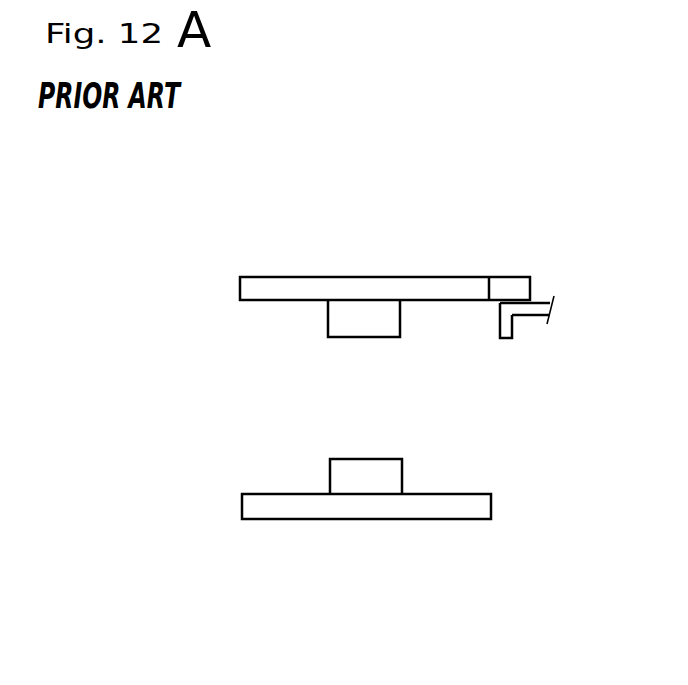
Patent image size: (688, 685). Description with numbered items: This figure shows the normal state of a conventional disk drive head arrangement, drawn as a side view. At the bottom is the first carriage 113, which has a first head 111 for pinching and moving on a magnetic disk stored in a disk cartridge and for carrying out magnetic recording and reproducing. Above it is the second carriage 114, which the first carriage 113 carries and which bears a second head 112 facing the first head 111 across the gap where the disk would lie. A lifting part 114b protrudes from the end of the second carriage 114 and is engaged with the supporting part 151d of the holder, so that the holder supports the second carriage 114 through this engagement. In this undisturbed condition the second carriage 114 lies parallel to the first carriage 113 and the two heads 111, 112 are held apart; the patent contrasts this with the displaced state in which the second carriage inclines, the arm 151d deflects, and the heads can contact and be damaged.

The second carriage 114 is at (265, 277).
The lifting part 114b is at (513, 277).
The second head 112 is at (340, 320).
The supporting part 151d is at (528, 315).
The first carriage 113 is at (242, 505).
The first head 111 is at (340, 471).